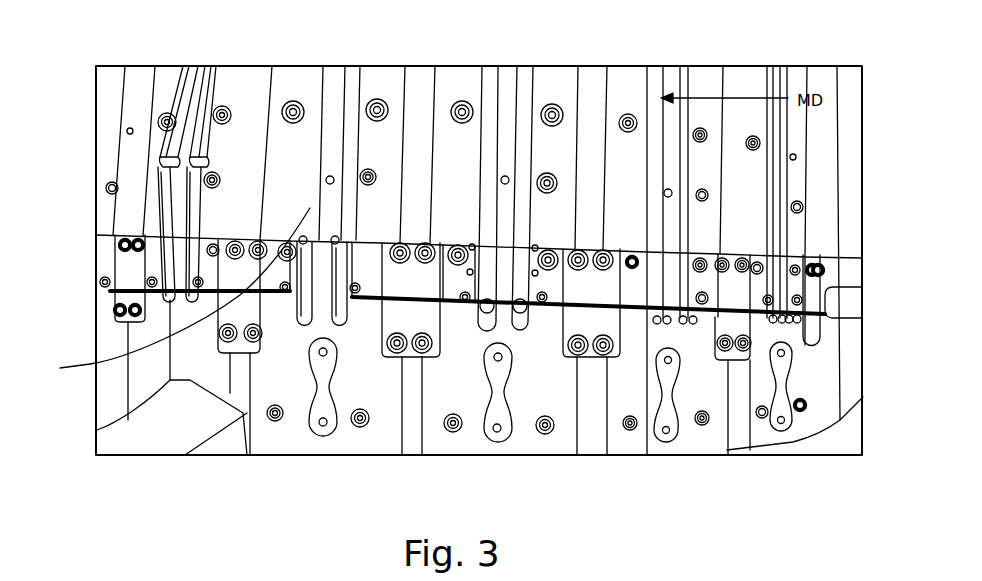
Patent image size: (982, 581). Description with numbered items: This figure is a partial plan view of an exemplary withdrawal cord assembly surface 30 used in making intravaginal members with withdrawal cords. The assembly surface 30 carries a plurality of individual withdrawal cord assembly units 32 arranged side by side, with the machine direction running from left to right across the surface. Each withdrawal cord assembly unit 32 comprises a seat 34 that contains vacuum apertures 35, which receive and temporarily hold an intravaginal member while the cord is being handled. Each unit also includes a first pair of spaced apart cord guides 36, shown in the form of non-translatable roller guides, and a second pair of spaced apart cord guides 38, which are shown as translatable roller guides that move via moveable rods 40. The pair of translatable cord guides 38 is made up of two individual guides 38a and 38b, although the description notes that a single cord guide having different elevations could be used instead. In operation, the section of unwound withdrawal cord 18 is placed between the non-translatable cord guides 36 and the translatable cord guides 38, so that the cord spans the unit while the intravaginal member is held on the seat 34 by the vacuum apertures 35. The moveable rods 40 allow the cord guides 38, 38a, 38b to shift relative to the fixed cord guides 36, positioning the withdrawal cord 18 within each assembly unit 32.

The withdrawal cord 18 is at (819, 362).
The assembly surface 30 is at (432, 446).
The withdrawal cord assembly units 32 is at (471, 393).
The seat 34 is at (665, 433).
The vacuum apertures 35 is at (323, 420).
The first pair of spaced apart cord guides 36 is at (476, 254).
The second pair of spaced apart cord guides 38 is at (341, 238).
The individual guide 38a is at (693, 324).
The individual guide 38b is at (684, 324).
The moveable rods 40 is at (169, 294).